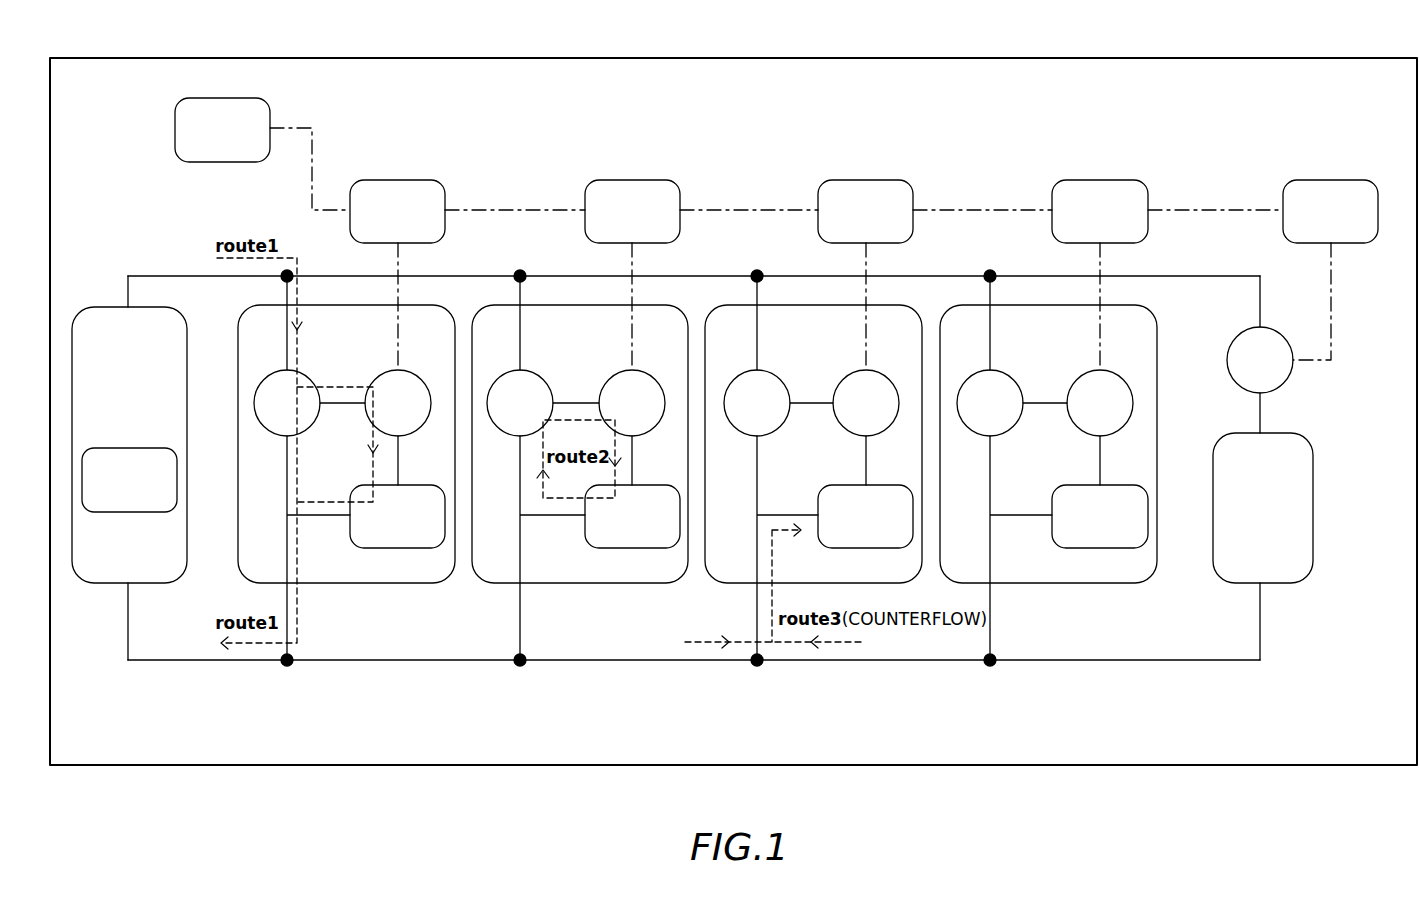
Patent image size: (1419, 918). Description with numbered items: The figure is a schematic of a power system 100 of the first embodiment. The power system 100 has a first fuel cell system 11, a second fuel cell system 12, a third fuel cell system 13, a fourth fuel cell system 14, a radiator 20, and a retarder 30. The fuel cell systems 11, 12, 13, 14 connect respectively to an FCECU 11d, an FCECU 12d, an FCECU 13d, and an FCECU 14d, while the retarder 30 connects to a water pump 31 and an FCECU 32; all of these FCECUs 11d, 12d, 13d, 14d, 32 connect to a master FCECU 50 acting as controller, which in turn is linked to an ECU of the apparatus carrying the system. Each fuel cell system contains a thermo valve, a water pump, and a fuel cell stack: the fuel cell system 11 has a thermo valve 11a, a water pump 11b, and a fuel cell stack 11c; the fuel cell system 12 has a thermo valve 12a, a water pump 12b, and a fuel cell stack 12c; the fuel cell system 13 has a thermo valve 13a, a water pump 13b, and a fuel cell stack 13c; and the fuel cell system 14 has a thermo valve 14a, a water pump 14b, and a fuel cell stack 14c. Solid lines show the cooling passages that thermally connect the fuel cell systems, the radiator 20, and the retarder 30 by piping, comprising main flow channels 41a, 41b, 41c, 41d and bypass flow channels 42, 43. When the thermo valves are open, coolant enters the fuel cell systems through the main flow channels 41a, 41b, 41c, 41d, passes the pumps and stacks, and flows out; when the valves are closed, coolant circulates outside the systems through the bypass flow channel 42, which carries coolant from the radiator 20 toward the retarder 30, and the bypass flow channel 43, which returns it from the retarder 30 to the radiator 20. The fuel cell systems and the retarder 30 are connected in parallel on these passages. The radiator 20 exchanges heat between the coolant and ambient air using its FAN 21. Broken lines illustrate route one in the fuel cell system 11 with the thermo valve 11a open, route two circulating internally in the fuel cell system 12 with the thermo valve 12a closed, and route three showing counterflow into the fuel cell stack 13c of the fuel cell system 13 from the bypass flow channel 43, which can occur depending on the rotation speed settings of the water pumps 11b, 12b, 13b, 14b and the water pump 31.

The power system 100 is at (755, 58).
The master FCECU 50 is at (227, 162).
The FCECU 11d is at (395, 181).
The FCECU 12d is at (629, 181).
The FCECU 13d is at (863, 181).
The FCECU 14d is at (1097, 181).
The FCECU 32 is at (1328, 181).
The radiator 20 is at (111, 307).
The FAN 21 is at (132, 512).
The bypass flow channel 42 is at (490, 275).
The bypass flow channel 43 is at (460, 660).
The fuel cell system 11 is at (346, 468).
The thermo valve 11a is at (265, 376).
The water pump 11b is at (421, 378).
The fuel cell stack 11c is at (421, 484).
The main flow channel 41a is at (287, 538).
The fuel cell system 12 is at (580, 468).
The thermo valve 12a is at (498, 376).
The water pump 12b is at (608, 378).
The fuel cell stack 12c is at (654, 484).
The main flow channel 41b is at (520, 538).
The fuel cell system 13 is at (813, 468).
The thermo valve 13a is at (733, 376).
The water pump 13b is at (842, 378).
The fuel cell stack 13c is at (887, 484).
The main flow channel 41c is at (730, 603).
The fuel cell system 14 is at (1048, 468).
The thermo valve 14a is at (966, 376).
The water pump 14b is at (1075, 378).
The fuel cell stack 14c is at (1123, 484).
The main flow channel 41d is at (989, 538).
The water pump 31 is at (1239, 338).
The retarder 30 is at (1220, 433).